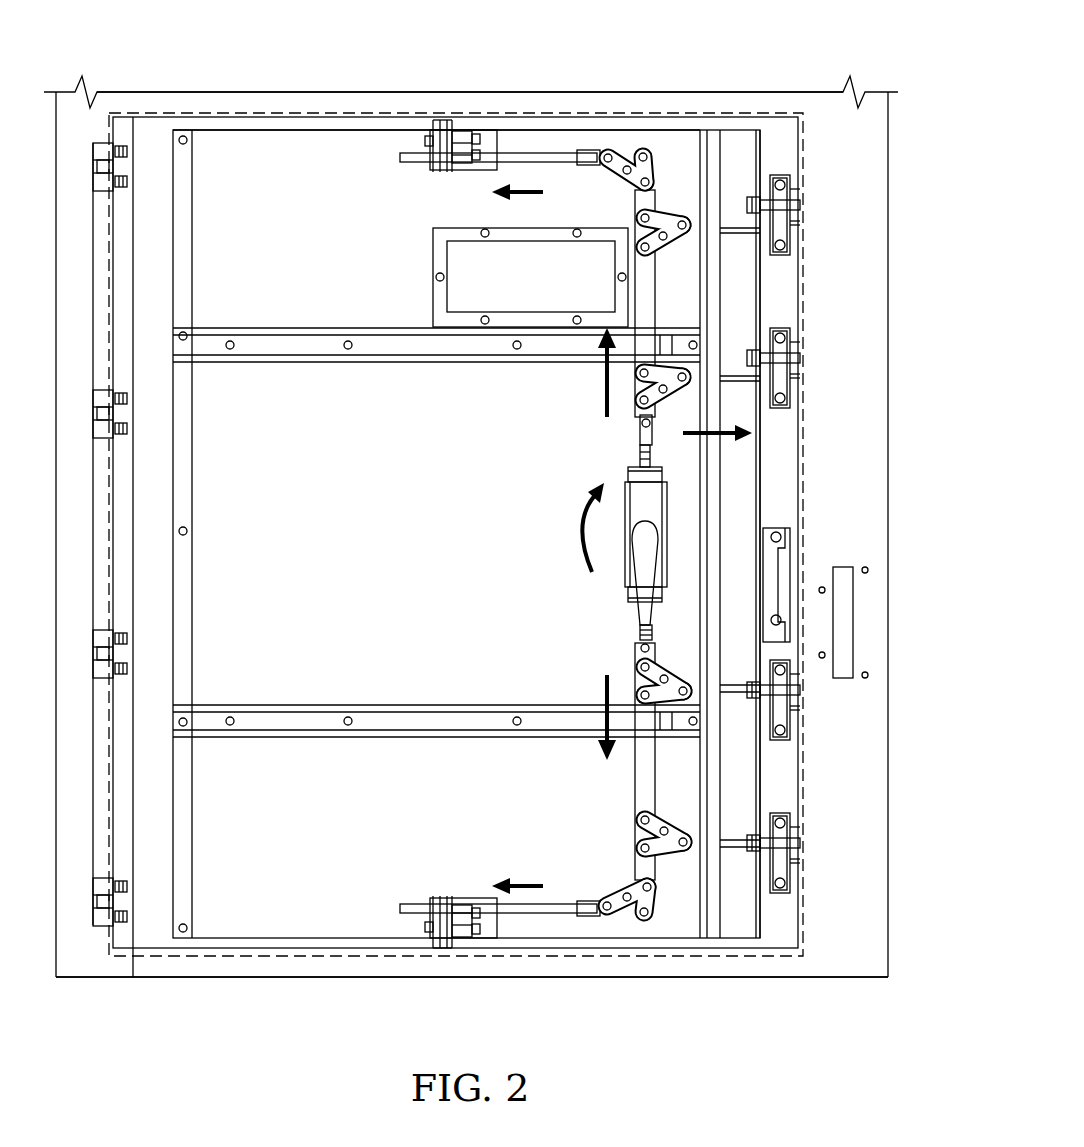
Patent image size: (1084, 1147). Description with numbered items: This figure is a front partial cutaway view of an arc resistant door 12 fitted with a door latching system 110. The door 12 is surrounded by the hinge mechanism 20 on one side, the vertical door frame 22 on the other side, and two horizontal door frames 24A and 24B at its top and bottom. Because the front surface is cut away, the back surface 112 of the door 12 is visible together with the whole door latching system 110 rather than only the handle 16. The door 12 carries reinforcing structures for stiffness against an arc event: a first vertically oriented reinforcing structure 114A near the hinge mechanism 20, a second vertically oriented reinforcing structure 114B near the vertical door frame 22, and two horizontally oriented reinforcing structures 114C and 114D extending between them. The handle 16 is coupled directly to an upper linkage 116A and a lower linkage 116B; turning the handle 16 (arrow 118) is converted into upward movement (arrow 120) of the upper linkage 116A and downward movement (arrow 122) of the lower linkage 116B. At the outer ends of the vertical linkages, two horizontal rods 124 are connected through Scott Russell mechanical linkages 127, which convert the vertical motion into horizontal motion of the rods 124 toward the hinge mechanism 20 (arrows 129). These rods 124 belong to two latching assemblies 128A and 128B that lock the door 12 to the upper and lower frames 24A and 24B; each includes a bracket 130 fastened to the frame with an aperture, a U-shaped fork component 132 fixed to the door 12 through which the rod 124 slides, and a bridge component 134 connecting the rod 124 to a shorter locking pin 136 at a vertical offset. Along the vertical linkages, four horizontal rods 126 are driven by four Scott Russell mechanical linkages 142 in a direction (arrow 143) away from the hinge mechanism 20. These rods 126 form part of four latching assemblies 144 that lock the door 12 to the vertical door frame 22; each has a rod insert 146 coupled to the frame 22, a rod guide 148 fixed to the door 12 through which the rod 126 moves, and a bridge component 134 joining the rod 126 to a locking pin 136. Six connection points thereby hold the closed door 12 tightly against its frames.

The door 12 is at (250, 912).
The handle 16 is at (625, 580).
The hinge mechanism 20 is at (84, 126).
The vertical door frame 22 is at (888, 615).
The horizontal door frame 24A is at (230, 118).
The horizontal door frame 24B is at (310, 978).
The door latching system 110 is at (668, 165).
The back surface 112 is at (325, 145).
The first vertically oriented reinforcing structure 114A is at (193, 535).
The second vertically oriented reinforcing structure 114B is at (690, 915).
The horizontally oriented reinforcing structure 114C is at (310, 330).
The horizontally oriented reinforcing structure 114D is at (310, 738).
The upper linkage 116A is at (635, 305).
The lower linkage 116B is at (635, 783).
The rotation arrow 118 is at (572, 545).
The vertically upward direction arrow 120 is at (600, 395).
The vertically downward direction arrow 122 is at (600, 690).
The horizontal rod 124 is at (550, 150).
The horizontal rod 126 is at (762, 240).
The Scott Russell mechanical linkage 127 is at (623, 142).
The latching assembly 128A is at (375, 178).
The latching assembly 128B is at (397, 886).
The direction arrow 129 is at (550, 187).
The bracket 130 is at (440, 128).
The U-shaped fork component 132 is at (437, 172).
The bridge component 134 is at (768, 178).
The locking pin 136 is at (470, 135).
The Scott Russell mechanical linkage 142 is at (686, 190).
The direction arrow 143 is at (712, 440).
The latching assembly 144 is at (793, 150).
The rod insert 146 is at (795, 202).
The rod guide 148 is at (785, 245).